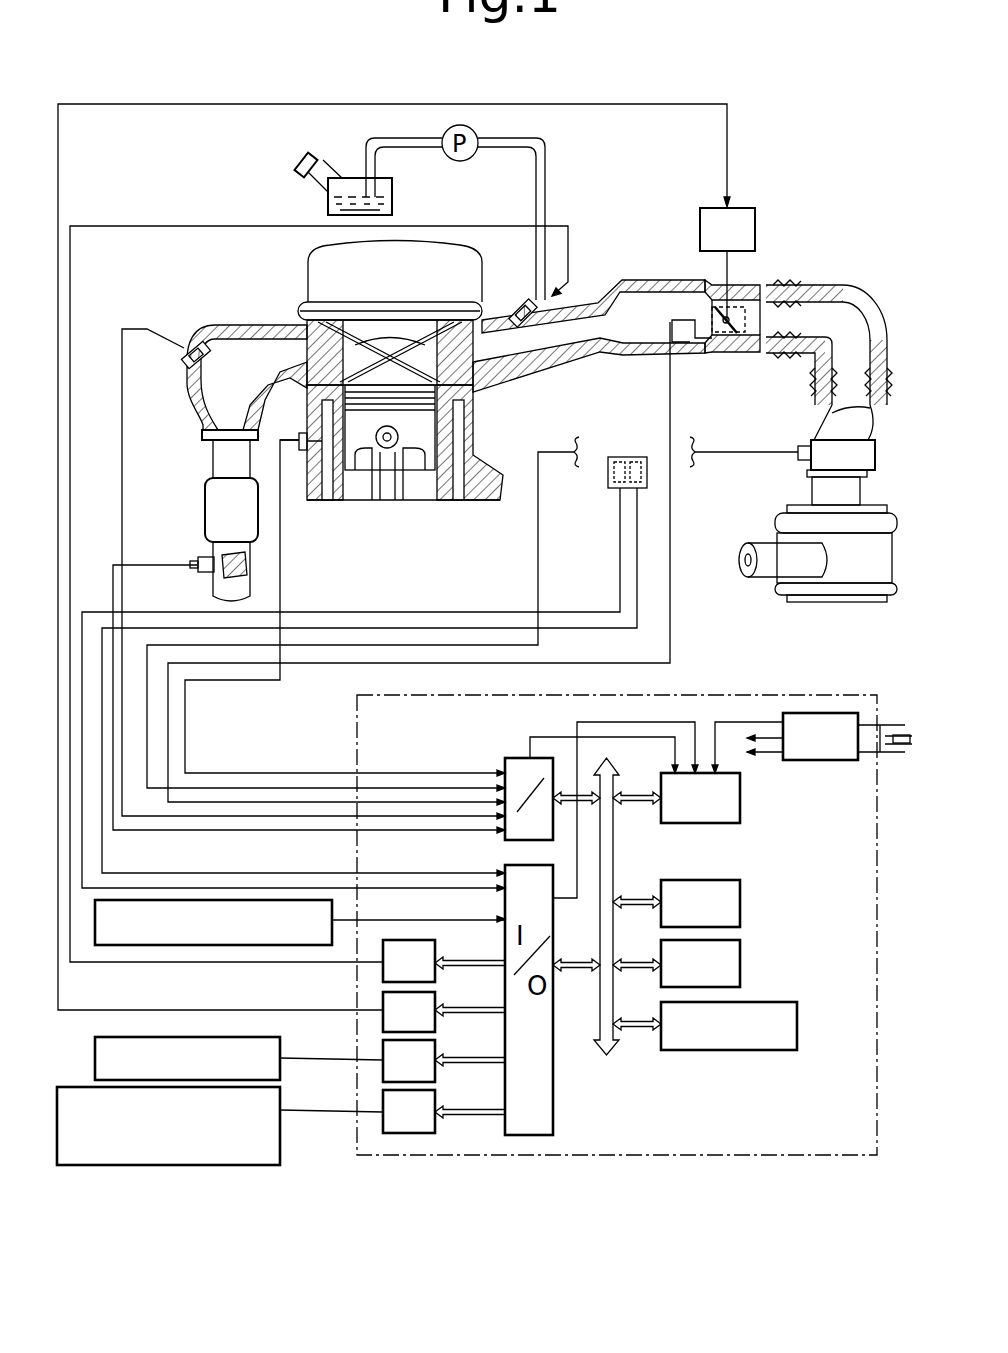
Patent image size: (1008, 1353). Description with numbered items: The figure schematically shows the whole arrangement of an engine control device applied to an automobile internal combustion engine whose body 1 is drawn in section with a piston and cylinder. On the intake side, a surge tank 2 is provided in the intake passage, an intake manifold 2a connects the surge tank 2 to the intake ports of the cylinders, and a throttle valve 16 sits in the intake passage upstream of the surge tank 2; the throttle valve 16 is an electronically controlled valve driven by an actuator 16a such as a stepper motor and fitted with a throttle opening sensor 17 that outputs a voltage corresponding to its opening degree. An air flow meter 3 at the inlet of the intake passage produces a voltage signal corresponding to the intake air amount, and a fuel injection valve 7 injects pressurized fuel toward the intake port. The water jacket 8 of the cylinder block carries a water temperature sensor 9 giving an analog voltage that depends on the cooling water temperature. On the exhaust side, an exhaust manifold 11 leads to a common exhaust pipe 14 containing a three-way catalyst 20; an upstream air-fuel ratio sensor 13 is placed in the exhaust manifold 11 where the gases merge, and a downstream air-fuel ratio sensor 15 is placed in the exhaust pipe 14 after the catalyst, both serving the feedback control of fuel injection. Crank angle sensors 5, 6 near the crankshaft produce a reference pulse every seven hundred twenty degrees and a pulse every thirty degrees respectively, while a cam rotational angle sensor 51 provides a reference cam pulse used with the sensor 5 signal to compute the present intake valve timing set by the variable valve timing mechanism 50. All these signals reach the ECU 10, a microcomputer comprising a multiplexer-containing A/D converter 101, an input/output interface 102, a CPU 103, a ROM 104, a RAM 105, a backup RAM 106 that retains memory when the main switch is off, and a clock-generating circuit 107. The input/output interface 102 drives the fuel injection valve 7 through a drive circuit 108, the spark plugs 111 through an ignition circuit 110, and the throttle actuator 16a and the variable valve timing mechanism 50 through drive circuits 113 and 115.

The body of an internal combustion engine 1 is at (458, 254).
The surge tank 2 is at (660, 280).
The intake manifold 2a is at (607, 300).
The air flow meter 3 is at (875, 455).
The crank angle sensor 5 is at (606, 480).
The crank angle sensor 6 is at (647, 478).
The fuel injection valve 7 is at (513, 308).
The water jacket 8 is at (322, 490).
The water temperature sensor 9 is at (298, 445).
The ECU 10 is at (877, 970).
The exhaust manifold 11 is at (240, 326).
The upstream air-fuel ratio sensor 13 is at (182, 345).
The exhaust pipe 14 is at (250, 562).
The downstream air-fuel ratio sensor 15 is at (197, 560).
The throttle valve 16 is at (728, 345).
The actuator 16a is at (755, 230).
The throttle opening sensor 17 is at (696, 352).
The three-way catalyst 20 is at (205, 485).
The variable valve timing mechanism 50 is at (281, 1100).
The cam rotational angle sensor 51 is at (286, 945).
The A/D converter 101 is at (505, 760).
The input/output interface 102 is at (554, 1058).
The CPU 103 is at (741, 805).
The ROM 104 is at (741, 903).
The RAM 105 is at (741, 963).
The backup RAM 106 is at (797, 1025).
The clock-generating circuit 107 is at (832, 762).
The drive circuit 108 is at (436, 945).
The ignition circuit 110 is at (436, 1080).
The spark plug 111 is at (281, 1046).
The drive circuit 113 is at (436, 1030).
The drive circuit 115 is at (436, 1132).